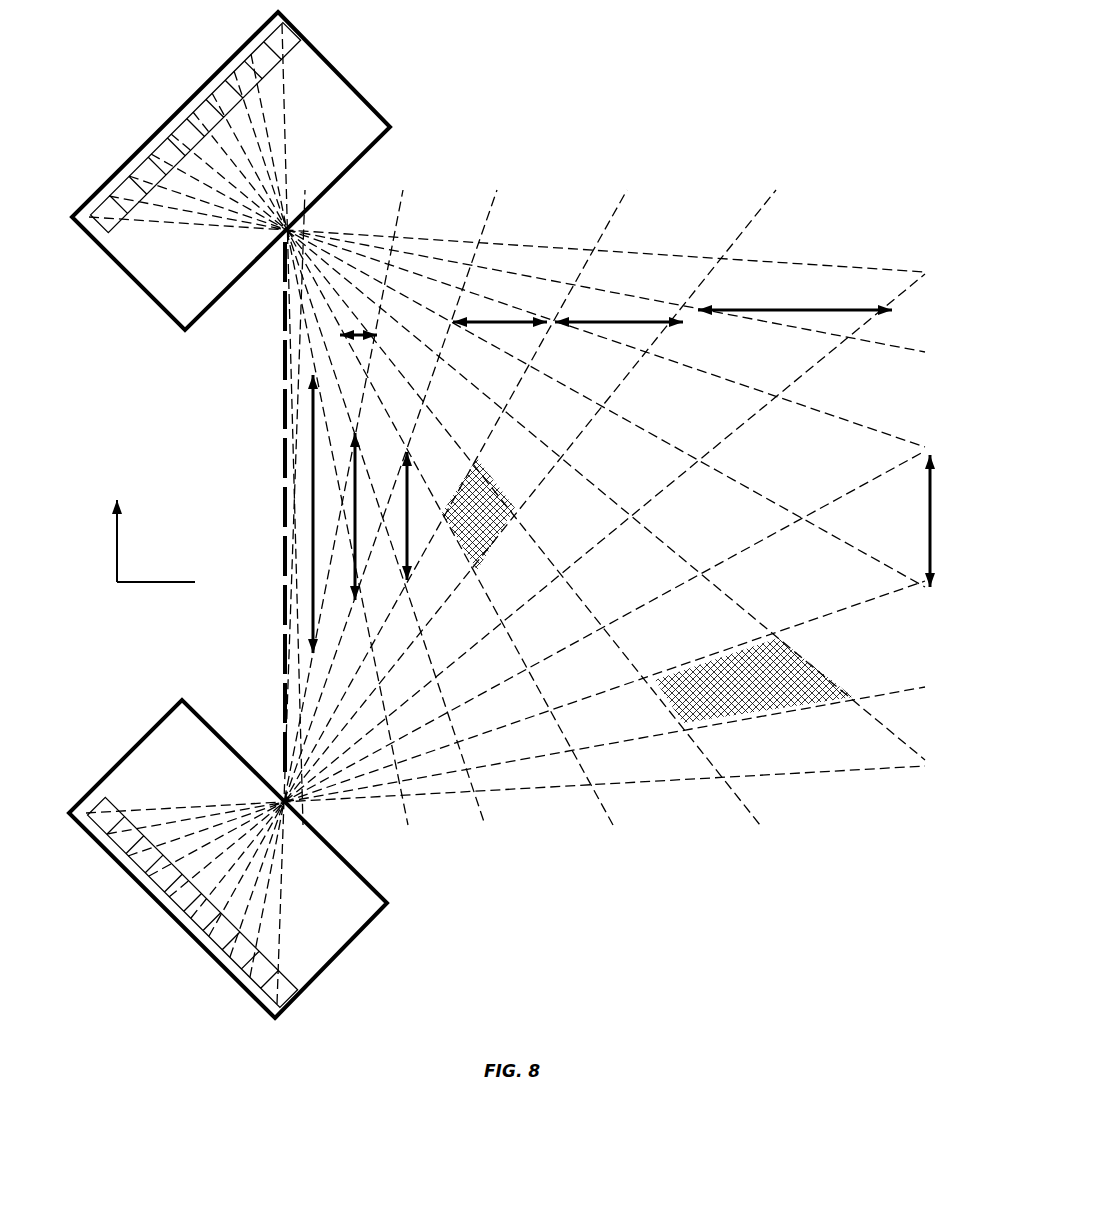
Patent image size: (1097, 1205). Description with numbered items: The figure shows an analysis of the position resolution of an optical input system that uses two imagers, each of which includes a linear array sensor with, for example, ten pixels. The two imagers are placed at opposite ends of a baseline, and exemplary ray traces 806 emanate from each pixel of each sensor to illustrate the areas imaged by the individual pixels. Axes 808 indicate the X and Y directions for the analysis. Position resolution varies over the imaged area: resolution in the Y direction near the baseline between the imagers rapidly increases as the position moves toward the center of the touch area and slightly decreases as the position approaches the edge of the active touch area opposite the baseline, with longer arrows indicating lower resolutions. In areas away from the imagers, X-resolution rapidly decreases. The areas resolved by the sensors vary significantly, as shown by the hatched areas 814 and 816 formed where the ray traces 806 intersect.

The ray traces 806 is at (747, 245).
The axes 808 is at (124, 592).
The area 814 is at (496, 528).
The area 816 is at (768, 695).